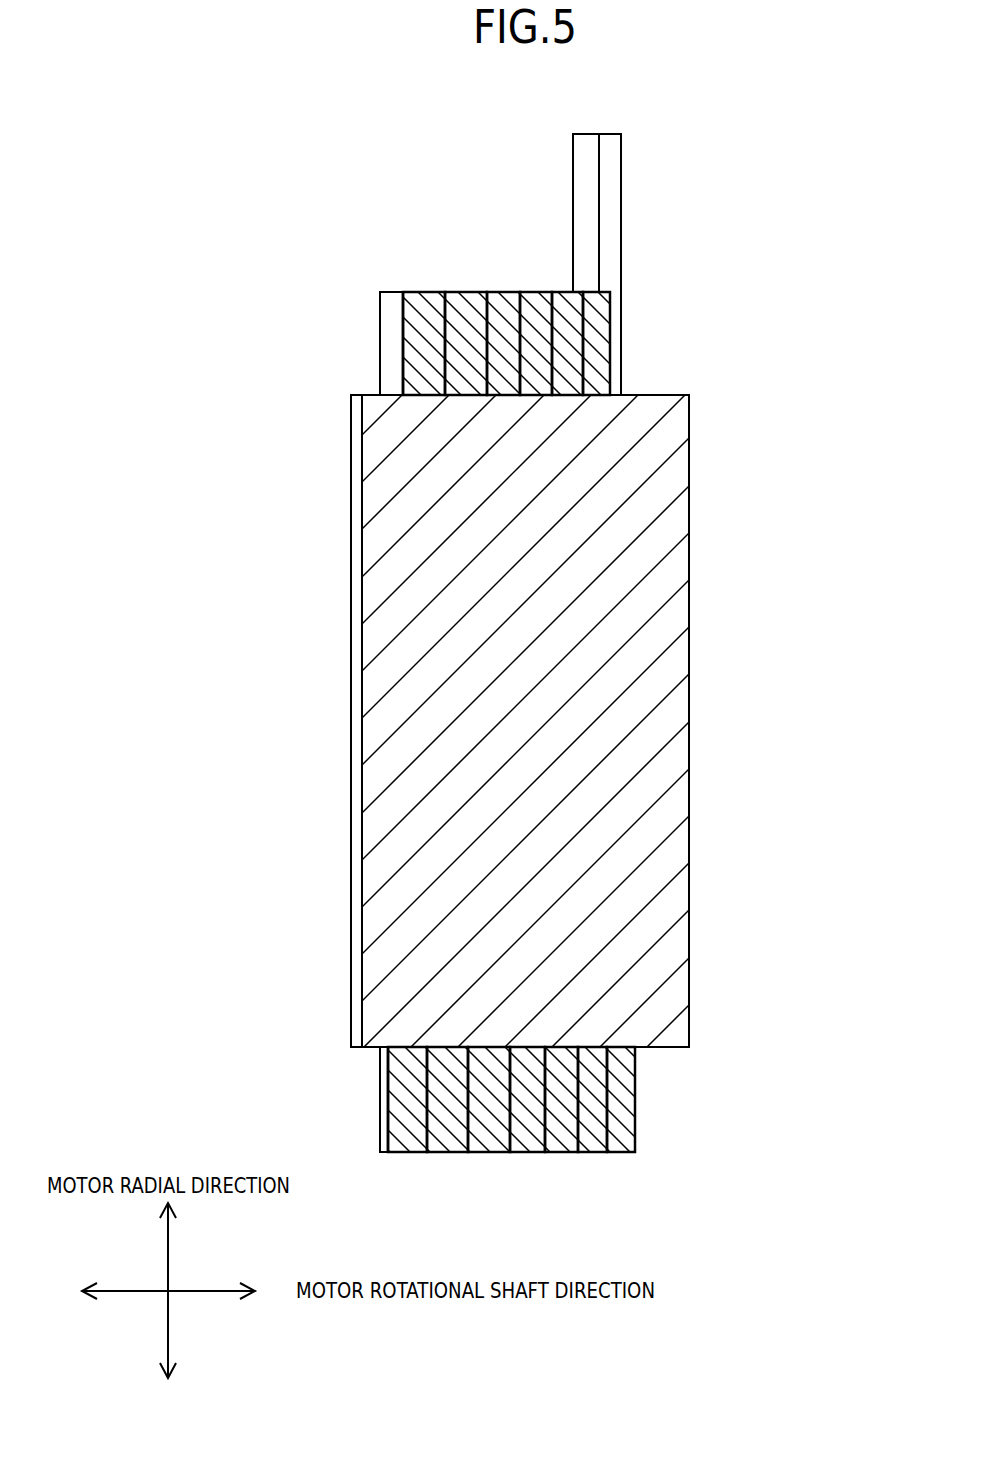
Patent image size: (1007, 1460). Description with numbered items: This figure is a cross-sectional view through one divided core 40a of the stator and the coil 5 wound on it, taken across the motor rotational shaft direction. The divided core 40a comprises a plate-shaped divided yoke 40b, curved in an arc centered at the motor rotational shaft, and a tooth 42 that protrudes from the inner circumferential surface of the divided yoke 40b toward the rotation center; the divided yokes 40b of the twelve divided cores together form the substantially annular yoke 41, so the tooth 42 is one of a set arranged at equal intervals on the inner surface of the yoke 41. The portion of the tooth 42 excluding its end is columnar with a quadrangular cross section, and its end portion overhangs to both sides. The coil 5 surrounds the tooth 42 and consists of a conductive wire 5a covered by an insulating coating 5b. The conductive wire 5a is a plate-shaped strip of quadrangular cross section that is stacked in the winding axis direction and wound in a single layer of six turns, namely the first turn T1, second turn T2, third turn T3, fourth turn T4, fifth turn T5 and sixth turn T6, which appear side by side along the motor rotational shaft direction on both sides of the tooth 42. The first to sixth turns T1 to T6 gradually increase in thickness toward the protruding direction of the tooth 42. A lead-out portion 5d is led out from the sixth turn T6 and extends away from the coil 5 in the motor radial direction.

The coil 5 is at (410, 1169).
The conductive wire 5a is at (449, 1153).
The insulating coating 5b is at (490, 1153).
The lead-out portion 5d is at (610, 133).
The first turn T1 is at (420, 294).
The second turn T2 is at (463, 294).
The third turn T3 is at (503, 294).
The fourth turn T4 is at (540, 294).
The fifth turn T5 is at (592, 1153).
The sixth turn T6 is at (622, 1153).
The divided core 40a is at (688, 556).
The divided yoke 40b is at (688, 651).
The yoke 41 is at (666, 396).
The tooth 42 is at (632, 803).